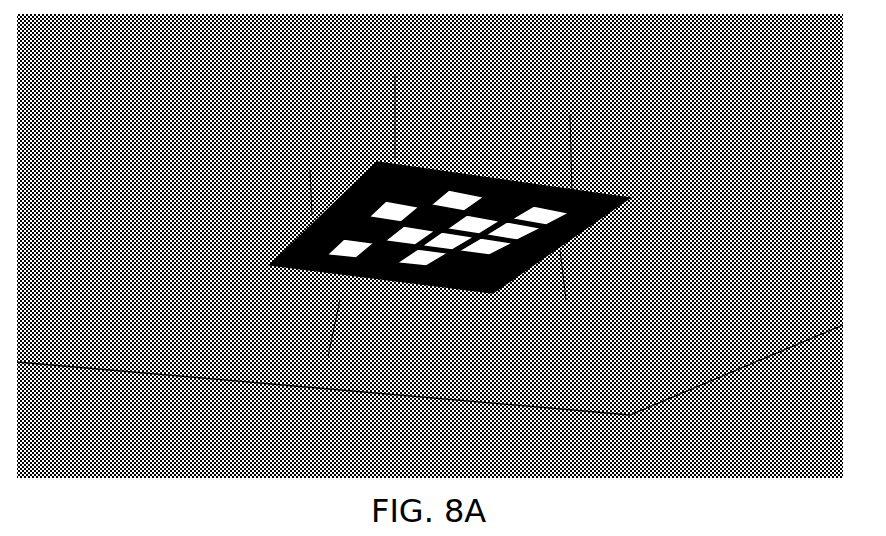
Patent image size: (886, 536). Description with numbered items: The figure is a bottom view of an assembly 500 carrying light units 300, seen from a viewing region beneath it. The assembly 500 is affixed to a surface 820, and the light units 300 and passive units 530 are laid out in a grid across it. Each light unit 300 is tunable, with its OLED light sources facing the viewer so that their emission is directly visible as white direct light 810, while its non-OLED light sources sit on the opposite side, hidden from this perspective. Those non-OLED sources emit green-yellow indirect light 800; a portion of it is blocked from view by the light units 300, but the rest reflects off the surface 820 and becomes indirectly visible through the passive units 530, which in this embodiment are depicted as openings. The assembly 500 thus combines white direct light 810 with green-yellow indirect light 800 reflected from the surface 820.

The surface 820 is at (430, 246).
The green-yellow indirect light 800 is at (403, 232).
The light unit 300 is at (535, 262).
The assembly 500 is at (296, 243).
The passive unit 530 is at (405, 190).
The white direct light 810 is at (355, 252).